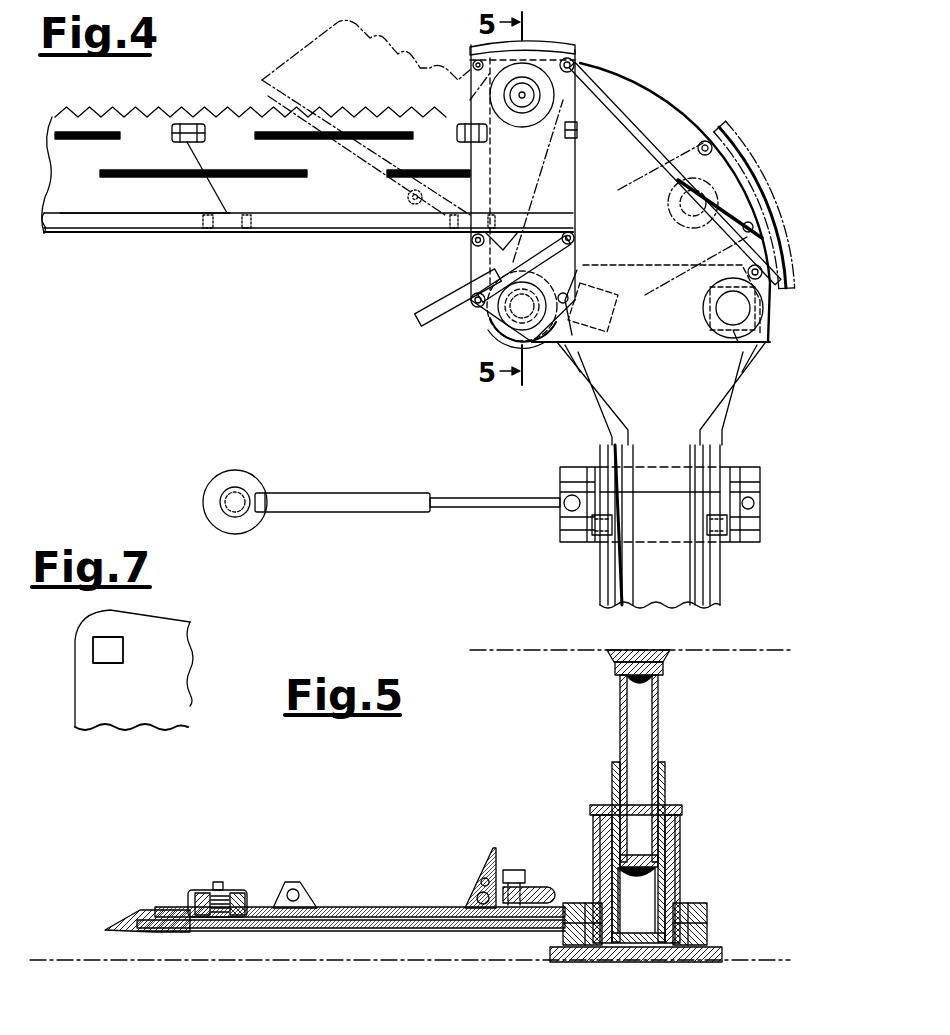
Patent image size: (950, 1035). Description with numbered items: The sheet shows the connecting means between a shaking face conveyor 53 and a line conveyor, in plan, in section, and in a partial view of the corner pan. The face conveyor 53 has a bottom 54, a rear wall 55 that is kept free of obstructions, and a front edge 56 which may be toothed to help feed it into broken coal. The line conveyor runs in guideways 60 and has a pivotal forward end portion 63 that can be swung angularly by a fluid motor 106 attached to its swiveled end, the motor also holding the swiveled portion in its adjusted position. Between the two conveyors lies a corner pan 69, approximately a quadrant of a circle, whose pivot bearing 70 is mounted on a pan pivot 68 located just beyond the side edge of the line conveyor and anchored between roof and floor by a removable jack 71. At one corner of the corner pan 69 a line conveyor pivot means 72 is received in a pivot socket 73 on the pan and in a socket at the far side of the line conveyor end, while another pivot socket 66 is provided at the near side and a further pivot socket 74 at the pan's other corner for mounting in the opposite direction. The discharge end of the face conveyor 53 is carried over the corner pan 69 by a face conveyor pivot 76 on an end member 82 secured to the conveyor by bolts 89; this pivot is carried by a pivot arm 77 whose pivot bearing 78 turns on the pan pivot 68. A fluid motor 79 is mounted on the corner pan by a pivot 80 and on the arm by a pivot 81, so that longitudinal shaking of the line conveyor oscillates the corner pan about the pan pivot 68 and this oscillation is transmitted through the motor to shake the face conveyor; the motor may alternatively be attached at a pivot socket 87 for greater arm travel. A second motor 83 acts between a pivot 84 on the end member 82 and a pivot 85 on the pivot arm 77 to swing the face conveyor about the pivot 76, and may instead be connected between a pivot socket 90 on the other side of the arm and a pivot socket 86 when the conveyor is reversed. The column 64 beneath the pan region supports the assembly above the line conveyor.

In FIG. 4, the face conveyor 53 is at (118, 238).
In FIG. 4, the bottom of face conveyor 54 is at (126, 110).
In FIG. 4, the rear wall 55 is at (160, 233).
In FIG. 4, the front edge 56 is at (212, 112).
In FIG. 4, the guideway 60 is at (570, 462).
In FIG. 4, the forward end portion 63 is at (700, 572).
In FIG. 4, the column bracket 64 is at (718, 370).
In FIG. 4, the pivot socket 66 is at (618, 323).
In FIG. 5, the pan pivot 68 is at (668, 960).
In FIG. 4, the corner pan 69 is at (665, 108).
In FIG. 7, the corner pan 69 is at (172, 652).
In FIG. 5, the corner pan 69 is at (358, 930).
In FIG. 5, the pivot bearing 70 is at (708, 928).
In FIG. 4, the jack 71 is at (508, 318).
In FIG. 5, the jack 71 is at (660, 718).
In FIG. 4, the line conveyor pivot means 72 is at (745, 312).
In FIG. 4, the pivot socket 73 is at (748, 336).
In FIG. 7, the pivot socket 74 is at (93, 648).
In FIG. 4, the face conveyor pivot 76 is at (526, 90).
In FIG. 5, the face conveyor pivot 76 is at (188, 898).
In FIG. 4, the pivot arm 77 is at (560, 50).
In FIG. 5, the pivot arm 77 is at (408, 928).
In FIG. 5, the pivot bearing 78 is at (705, 912).
In FIG. 4, the fluid motor 79 is at (765, 250).
In FIG. 4, the pivot 80 is at (763, 271).
In FIG. 4, the pivot 81 is at (575, 65).
In FIG. 4, the end member 82 is at (560, 160).
In FIG. 5, the end member 82 is at (365, 905).
In FIG. 4, the motor 83 is at (420, 302).
In FIG. 5, the motor 83 is at (542, 887).
In FIG. 4, the pivot 84 is at (580, 237).
In FIG. 5, the pivot 84 is at (518, 868).
In FIG. 4, the pivot 85 is at (472, 310).
In FIG. 4, the pivot socket 86 is at (471, 241).
In FIG. 4, the pivot socket 87 is at (475, 60).
In FIG. 4, the bolts 89 is at (458, 130).
In FIG. 4, the pivot socket 90 is at (580, 262).
In FIG. 4, the fluid motor 106 is at (388, 490).